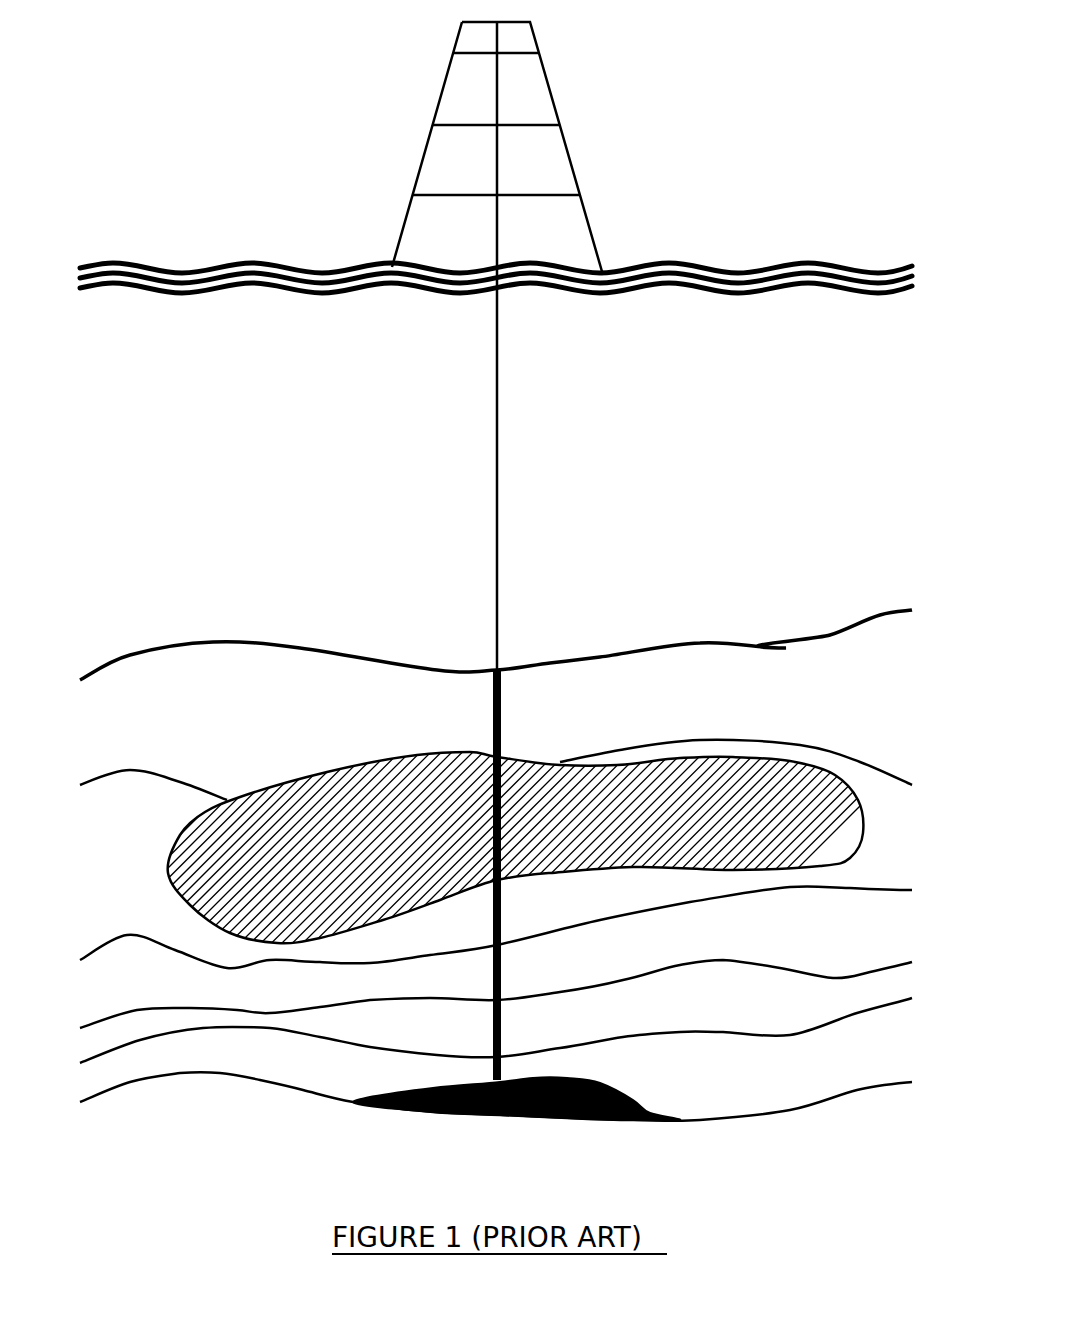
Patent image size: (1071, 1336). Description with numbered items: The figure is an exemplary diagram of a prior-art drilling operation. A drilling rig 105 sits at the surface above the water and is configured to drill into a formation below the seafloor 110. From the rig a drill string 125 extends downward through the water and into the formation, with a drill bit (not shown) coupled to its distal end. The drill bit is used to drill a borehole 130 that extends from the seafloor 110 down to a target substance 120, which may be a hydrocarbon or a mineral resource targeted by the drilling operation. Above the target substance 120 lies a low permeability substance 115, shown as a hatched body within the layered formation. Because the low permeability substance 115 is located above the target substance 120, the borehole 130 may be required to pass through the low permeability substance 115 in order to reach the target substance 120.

The drilling rig 105 is at (570, 157).
The seafloor 110 is at (786, 648).
The low permeability substance 115 is at (322, 772).
The target substance 120 is at (647, 1120).
The drill string 125 is at (497, 540).
The borehole 130 is at (502, 728).